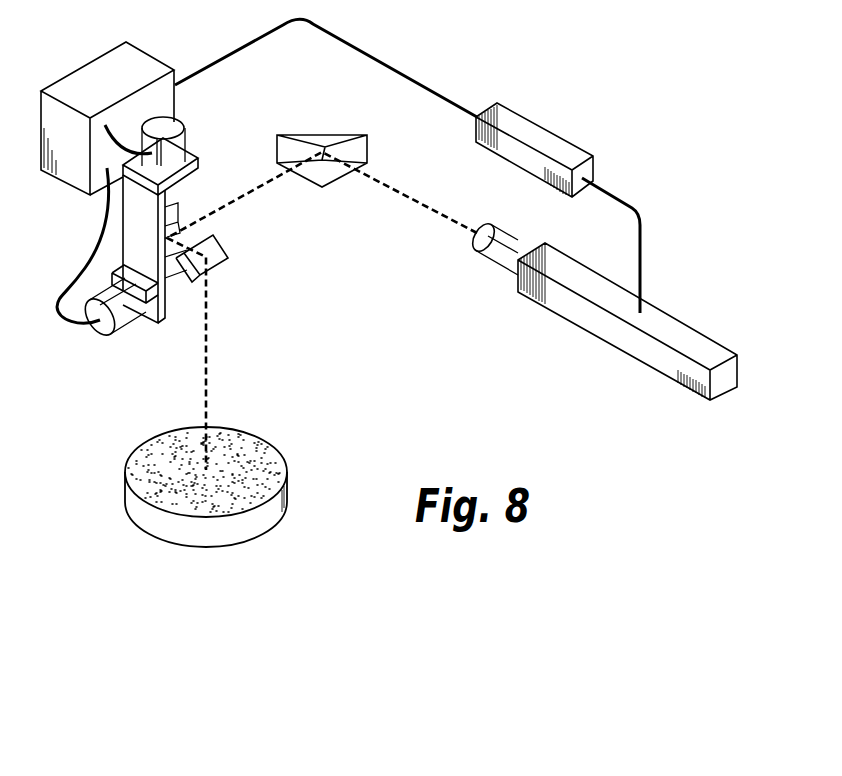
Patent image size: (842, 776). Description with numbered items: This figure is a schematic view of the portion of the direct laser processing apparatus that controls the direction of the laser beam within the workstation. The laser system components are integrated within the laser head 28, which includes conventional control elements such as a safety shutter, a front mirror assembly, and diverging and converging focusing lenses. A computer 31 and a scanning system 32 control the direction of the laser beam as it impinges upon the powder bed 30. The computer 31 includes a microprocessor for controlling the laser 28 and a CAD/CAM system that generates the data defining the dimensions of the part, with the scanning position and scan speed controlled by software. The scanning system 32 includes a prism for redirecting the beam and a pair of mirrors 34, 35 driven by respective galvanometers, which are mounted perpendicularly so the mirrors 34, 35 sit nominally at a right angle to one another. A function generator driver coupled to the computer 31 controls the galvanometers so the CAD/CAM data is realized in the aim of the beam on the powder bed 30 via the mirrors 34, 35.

The laser head 28 is at (692, 342).
The powder bed 30 is at (266, 465).
The computer 31 is at (538, 125).
The scanning system 32 is at (80, 80).
The mirror 34 is at (178, 222).
The mirror 35 is at (220, 253).